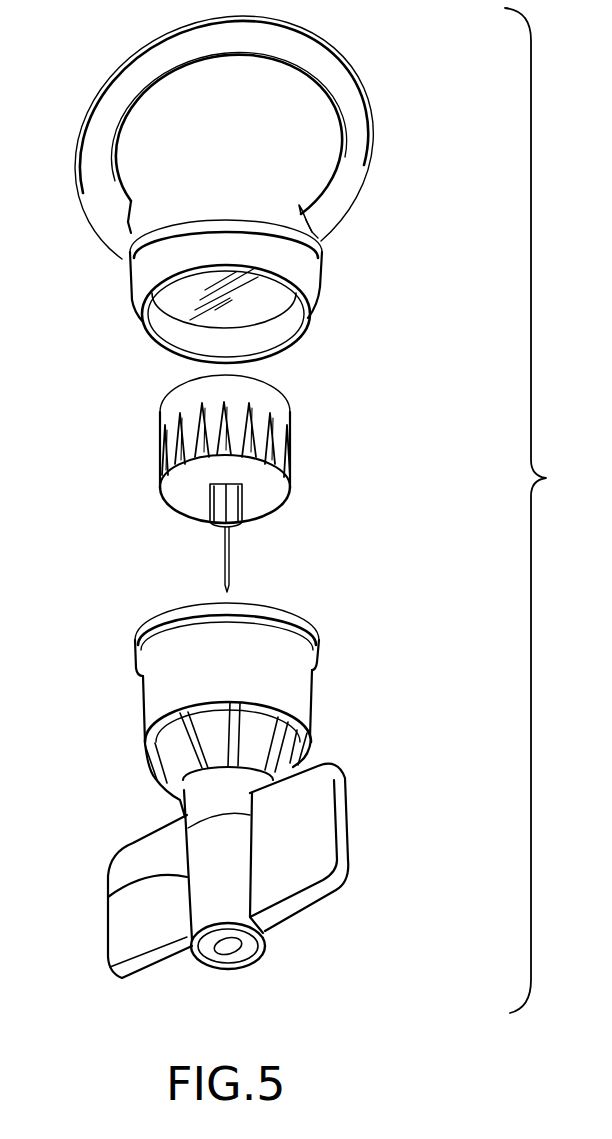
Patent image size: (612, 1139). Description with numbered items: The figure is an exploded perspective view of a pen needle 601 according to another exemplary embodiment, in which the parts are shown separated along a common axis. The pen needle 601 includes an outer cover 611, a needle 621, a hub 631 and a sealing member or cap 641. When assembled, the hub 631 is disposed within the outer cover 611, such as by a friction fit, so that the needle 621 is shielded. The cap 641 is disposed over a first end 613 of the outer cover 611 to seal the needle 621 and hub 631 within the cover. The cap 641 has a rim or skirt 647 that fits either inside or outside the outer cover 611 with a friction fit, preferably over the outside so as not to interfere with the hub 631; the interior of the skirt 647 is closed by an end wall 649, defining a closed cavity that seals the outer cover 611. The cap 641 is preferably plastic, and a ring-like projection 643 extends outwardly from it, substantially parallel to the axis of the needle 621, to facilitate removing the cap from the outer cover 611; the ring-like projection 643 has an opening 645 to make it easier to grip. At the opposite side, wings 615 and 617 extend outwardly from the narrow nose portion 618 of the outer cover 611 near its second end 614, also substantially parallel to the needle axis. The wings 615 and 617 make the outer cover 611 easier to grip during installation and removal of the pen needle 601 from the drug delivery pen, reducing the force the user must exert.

The pen needle 601 is at (248, 494).
The outer cover 611 is at (246, 793).
The first end 613 is at (313, 697).
The second end 614 is at (262, 957).
The wing 615 is at (340, 823).
The wing 617 is at (115, 896).
The narrow nose portion 618 is at (110, 895).
The needle 621 is at (240, 552).
The hub 631 is at (275, 483).
The cap 641 is at (209, 194).
The ring-like projection 643 is at (224, 132).
The opening 645 is at (190, 74).
The rim or skirt 647 is at (297, 340).
The end wall 649 is at (250, 283).